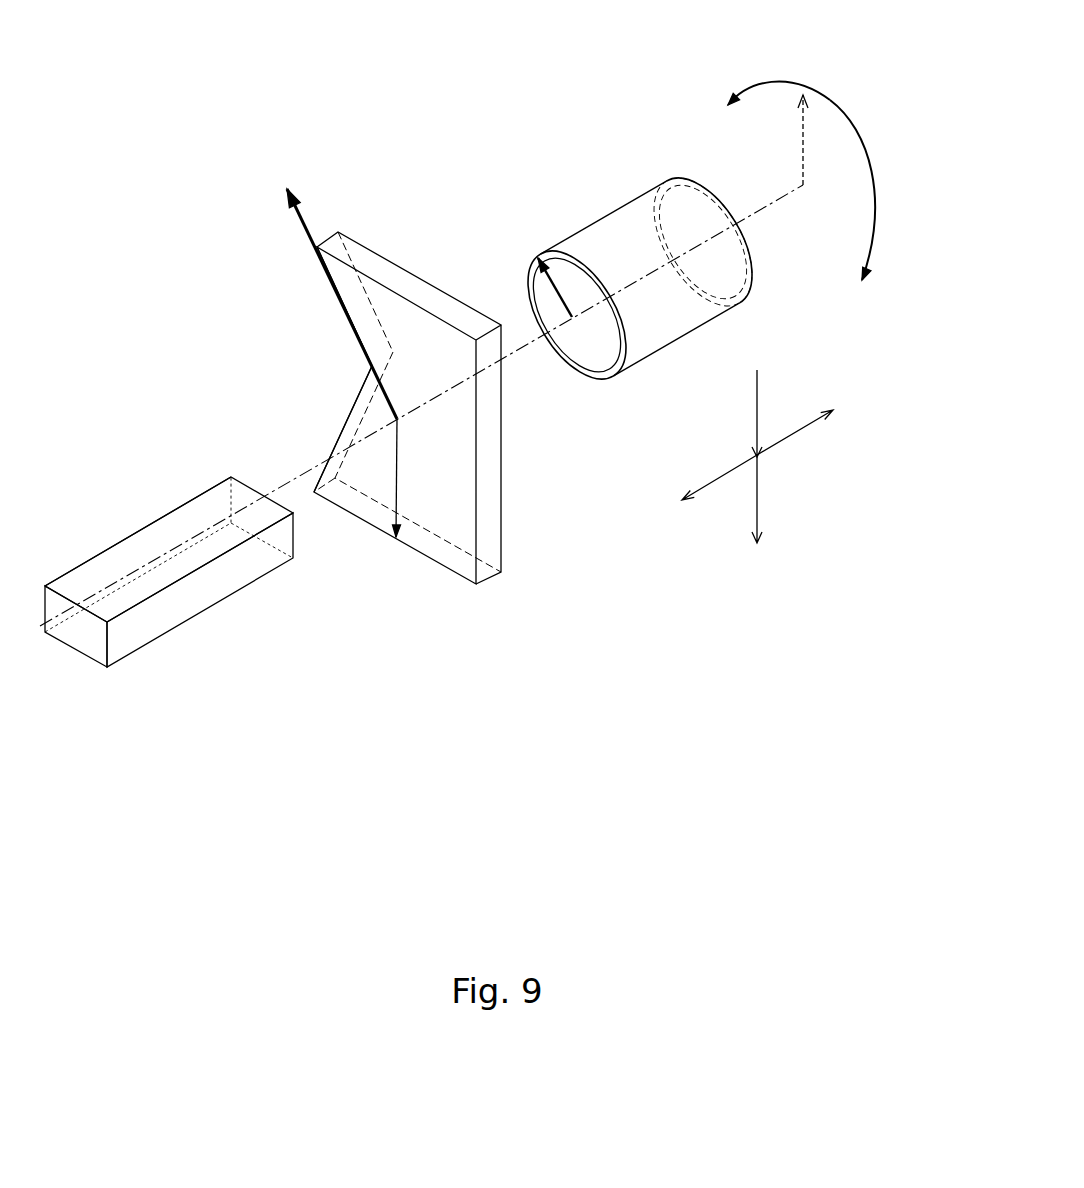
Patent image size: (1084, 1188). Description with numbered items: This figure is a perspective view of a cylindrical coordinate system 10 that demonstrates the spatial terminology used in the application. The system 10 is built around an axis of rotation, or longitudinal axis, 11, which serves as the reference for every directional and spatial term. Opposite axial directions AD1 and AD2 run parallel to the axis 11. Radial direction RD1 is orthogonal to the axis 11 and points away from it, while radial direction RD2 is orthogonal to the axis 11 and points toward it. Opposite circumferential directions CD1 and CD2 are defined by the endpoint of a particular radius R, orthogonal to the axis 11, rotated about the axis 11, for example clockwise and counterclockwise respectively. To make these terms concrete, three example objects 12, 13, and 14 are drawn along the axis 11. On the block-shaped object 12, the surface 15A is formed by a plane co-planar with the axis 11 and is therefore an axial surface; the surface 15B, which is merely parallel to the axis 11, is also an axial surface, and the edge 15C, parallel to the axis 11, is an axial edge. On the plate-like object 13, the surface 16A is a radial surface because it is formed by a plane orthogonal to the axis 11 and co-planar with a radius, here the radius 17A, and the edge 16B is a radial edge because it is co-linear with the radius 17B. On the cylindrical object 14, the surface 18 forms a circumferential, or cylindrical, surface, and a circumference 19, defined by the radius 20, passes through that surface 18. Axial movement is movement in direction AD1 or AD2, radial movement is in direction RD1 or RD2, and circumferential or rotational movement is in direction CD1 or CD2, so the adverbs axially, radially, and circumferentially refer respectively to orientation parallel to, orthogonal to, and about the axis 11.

The cylindrical coordinate system 10 is at (268, 323).
The axis of rotation 11 is at (742, 220).
The object 12 is at (137, 650).
The object 13 is at (510, 573).
The object 14 is at (667, 348).
The axial surface 15A is at (133, 553).
The axial surface 15B is at (187, 607).
The axial edge 15C is at (160, 515).
The radial surface 16A is at (402, 317).
The radial edge 16B is at (347, 308).
The radius 17A is at (397, 470).
The radius 17B is at (302, 225).
The circumferential surface 18 is at (607, 215).
The circumference 19 is at (527, 277).
The radius 20 is at (540, 262).
The radius R is at (803, 133).
The circumferential direction CD1 is at (887, 238).
The circumferential direction CD2 is at (758, 78).
The radial direction RD1 is at (760, 510).
The radial direction RD2 is at (760, 388).
The axial direction AD1 is at (787, 430).
The axial direction AD2 is at (718, 475).